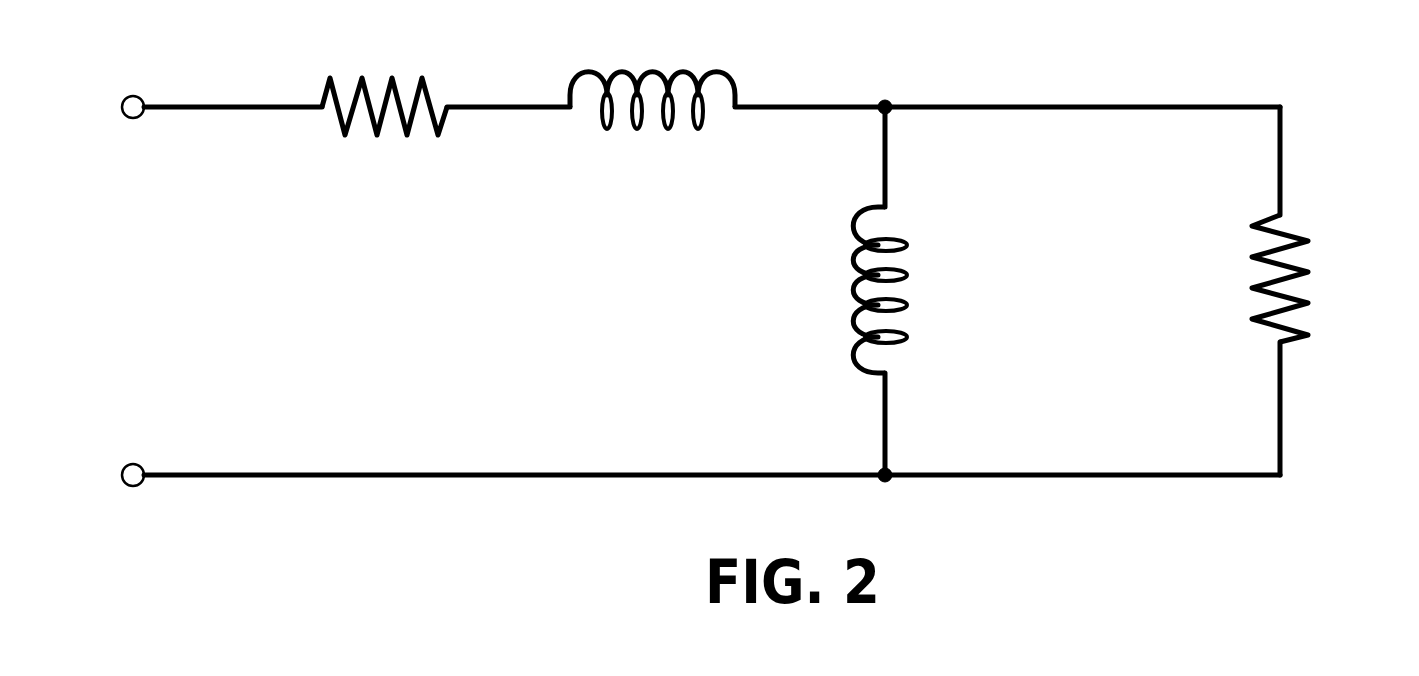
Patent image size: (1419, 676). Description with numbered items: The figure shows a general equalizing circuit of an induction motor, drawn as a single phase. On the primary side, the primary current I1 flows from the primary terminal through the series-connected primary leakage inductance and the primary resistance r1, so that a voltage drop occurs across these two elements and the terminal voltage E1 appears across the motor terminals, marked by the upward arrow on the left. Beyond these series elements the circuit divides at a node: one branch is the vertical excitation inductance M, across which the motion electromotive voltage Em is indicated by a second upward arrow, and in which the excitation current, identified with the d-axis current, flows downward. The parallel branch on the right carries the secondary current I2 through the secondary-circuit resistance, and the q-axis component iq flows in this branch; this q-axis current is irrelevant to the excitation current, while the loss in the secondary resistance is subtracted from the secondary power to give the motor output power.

The primary resistance r1 is at (384, 88).
The excitation inductance M is at (908, 290).
The terminal voltage E1 is at (125, 412).
The motion electromotive voltage Em is at (821, 178).
The primary current I1 is at (473, 170).
The secondary current I2 is at (938, 238).
The q-axis current iq is at (1299, 377).